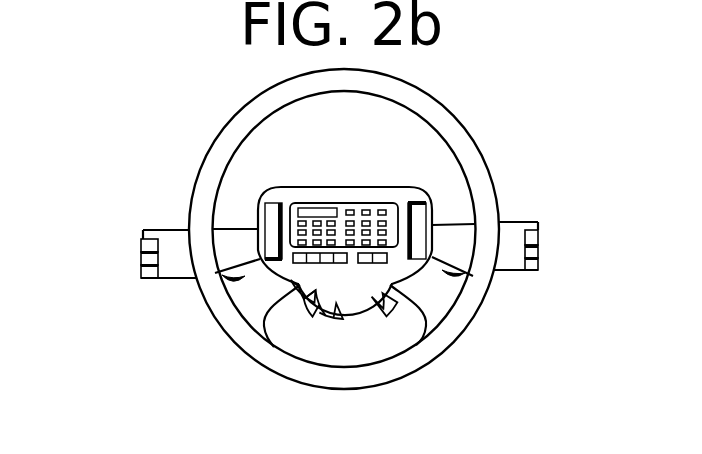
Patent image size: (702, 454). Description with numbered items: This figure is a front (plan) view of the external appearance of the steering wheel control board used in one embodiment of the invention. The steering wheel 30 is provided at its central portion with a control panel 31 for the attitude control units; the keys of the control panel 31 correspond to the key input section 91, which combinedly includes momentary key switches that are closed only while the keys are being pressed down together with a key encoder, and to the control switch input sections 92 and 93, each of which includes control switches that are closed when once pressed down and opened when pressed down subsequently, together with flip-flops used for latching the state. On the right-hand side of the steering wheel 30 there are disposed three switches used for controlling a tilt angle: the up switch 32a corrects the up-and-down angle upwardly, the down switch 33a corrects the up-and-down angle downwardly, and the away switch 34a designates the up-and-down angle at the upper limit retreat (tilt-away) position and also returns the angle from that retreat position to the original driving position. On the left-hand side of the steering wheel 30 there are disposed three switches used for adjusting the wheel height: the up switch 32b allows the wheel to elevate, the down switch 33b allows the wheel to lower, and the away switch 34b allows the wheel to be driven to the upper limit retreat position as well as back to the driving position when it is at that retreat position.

The steering wheel 30 is at (478, 142).
The control panel 31 is at (322, 187).
The key input section 91 is at (372, 210).
The control switch input section 92 is at (392, 268).
The control switch input section 93 is at (300, 267).
The up switch 32a is at (540, 233).
The down switch 33a is at (540, 251).
The away switch 34a is at (540, 268).
The up switch 32b is at (142, 238).
The down switch 33b is at (142, 255).
The away switch 34b is at (142, 272).